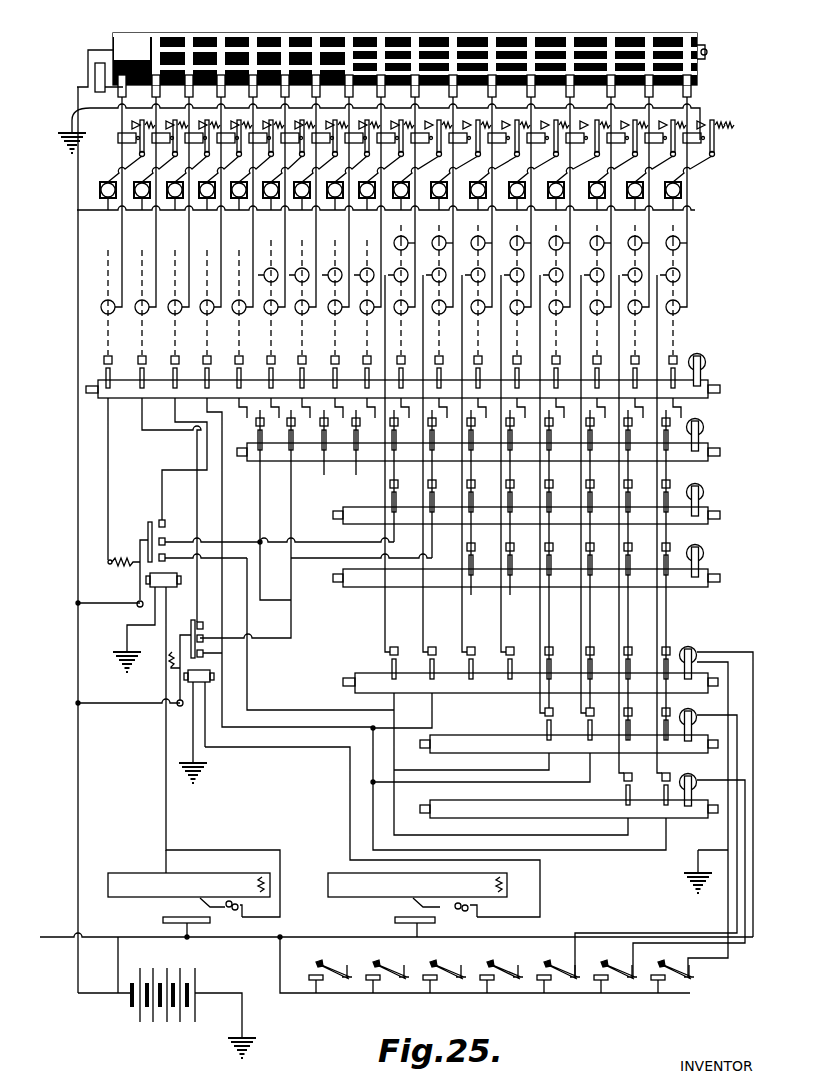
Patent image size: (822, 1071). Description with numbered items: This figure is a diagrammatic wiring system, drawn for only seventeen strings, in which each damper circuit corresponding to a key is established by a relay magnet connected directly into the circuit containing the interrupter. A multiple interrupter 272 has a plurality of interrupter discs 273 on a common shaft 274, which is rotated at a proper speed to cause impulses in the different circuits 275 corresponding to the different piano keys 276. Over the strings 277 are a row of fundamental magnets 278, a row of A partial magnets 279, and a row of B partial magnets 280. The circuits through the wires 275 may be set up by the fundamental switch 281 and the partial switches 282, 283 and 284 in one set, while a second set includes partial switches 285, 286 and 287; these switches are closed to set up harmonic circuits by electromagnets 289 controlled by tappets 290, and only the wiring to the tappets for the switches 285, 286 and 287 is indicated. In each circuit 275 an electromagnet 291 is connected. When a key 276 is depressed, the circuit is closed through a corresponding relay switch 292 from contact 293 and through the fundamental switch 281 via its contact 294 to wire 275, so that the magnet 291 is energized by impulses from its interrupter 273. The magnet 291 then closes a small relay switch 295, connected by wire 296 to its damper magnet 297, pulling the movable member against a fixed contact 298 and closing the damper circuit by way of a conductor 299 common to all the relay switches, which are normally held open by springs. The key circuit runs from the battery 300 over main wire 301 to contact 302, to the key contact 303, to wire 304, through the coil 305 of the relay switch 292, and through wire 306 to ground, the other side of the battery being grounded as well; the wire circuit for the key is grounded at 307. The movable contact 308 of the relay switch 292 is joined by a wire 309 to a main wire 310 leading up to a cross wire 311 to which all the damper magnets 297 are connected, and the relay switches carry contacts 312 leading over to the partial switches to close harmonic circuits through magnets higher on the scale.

The multiple interrupter 272 is at (700, 50).
The interrupter discs 273 is at (184, 32).
The common shaft 274 is at (103, 62).
The circuits 275 is at (152, 240).
The piano keys 276 is at (138, 856).
The strings 277 is at (106, 270).
The fundamental magnets 278 is at (100, 310).
The A partial magnets 279 is at (682, 273).
The B partial magnets 280 is at (682, 241).
The fundamental switch 281 is at (706, 382).
The partial switch 282 is at (706, 448).
The partial switch 283 is at (706, 506).
The partial switch 284 is at (706, 568).
The partial switch 285 is at (720, 682).
The partial switch 286 is at (720, 744).
The partial switch 287 is at (720, 808).
The electromagnets 289 is at (700, 356).
The tappets 290 is at (478, 968).
The electromagnet 291 is at (124, 140).
The relay switch 292 is at (148, 534).
The contact 293 is at (161, 518).
The contact 294 is at (102, 360).
The relay switch 295 is at (130, 130).
The wire 296 is at (120, 174).
The damper magnet 297 is at (100, 192).
The fixed contact 298 is at (124, 112).
The conductor 299 is at (74, 112).
The battery 300 is at (135, 1014).
The main wire 301 is at (252, 940).
The contact 302 is at (163, 920).
The key contact 303 is at (222, 892).
The wire 304 is at (172, 848).
The coil 305 is at (174, 572).
The wire 306 is at (142, 632).
The ground 307 is at (56, 130).
The movable contact 308 is at (136, 548).
The wire 309 is at (96, 602).
The main wire 310 is at (78, 570).
The cross wire 311 is at (120, 214).
The contacts 312 is at (163, 530).